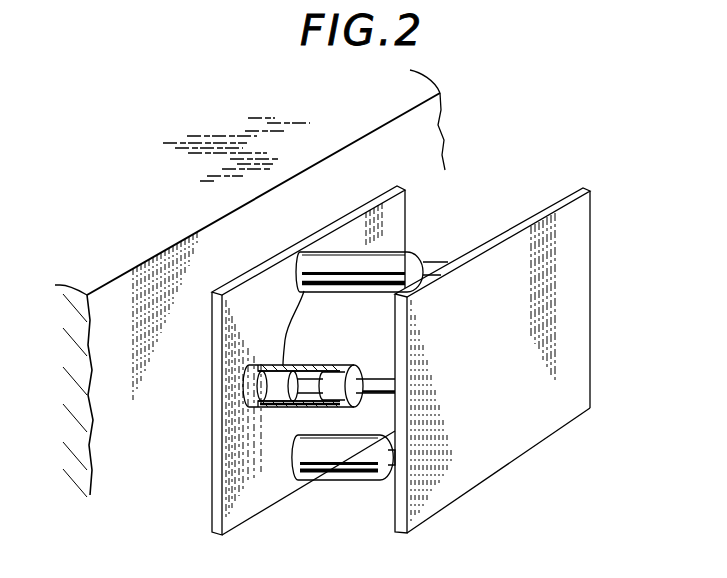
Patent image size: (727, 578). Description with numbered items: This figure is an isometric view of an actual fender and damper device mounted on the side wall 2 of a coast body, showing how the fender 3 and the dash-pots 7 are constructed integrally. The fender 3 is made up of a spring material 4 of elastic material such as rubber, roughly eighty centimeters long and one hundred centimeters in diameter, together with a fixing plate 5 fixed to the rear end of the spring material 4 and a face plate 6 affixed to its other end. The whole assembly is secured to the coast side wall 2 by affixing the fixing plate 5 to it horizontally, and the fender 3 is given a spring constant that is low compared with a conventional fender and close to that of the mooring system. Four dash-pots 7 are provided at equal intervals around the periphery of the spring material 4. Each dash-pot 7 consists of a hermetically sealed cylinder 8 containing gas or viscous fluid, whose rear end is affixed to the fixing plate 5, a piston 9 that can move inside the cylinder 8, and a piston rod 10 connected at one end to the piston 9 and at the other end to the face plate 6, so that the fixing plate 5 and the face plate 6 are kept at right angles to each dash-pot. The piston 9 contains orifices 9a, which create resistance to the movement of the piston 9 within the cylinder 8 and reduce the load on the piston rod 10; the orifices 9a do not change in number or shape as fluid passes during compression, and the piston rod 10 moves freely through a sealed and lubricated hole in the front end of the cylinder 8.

The side wall 2 is at (358, 114).
The fender 3 is at (373, 417).
The spring material 4 is at (337, 425).
The fixing plate 5 is at (240, 337).
The face plate 6 is at (578, 303).
The dash-pot 7 is at (424, 234).
The cylinder 8 is at (351, 365).
The piston 9 is at (293, 405).
The orifices 9a is at (314, 370).
The piston rod 10 is at (384, 379).